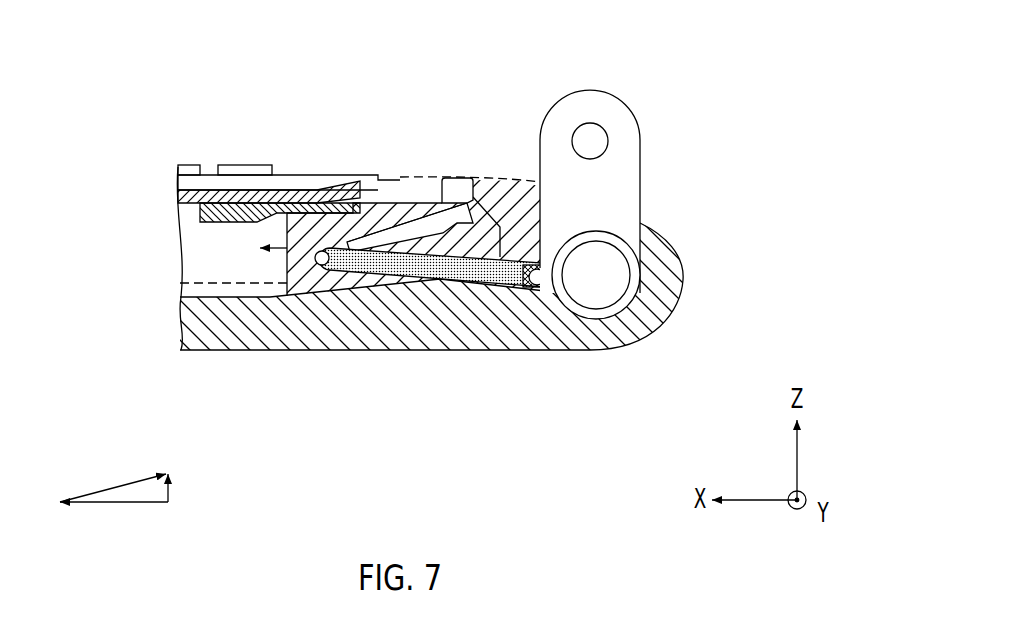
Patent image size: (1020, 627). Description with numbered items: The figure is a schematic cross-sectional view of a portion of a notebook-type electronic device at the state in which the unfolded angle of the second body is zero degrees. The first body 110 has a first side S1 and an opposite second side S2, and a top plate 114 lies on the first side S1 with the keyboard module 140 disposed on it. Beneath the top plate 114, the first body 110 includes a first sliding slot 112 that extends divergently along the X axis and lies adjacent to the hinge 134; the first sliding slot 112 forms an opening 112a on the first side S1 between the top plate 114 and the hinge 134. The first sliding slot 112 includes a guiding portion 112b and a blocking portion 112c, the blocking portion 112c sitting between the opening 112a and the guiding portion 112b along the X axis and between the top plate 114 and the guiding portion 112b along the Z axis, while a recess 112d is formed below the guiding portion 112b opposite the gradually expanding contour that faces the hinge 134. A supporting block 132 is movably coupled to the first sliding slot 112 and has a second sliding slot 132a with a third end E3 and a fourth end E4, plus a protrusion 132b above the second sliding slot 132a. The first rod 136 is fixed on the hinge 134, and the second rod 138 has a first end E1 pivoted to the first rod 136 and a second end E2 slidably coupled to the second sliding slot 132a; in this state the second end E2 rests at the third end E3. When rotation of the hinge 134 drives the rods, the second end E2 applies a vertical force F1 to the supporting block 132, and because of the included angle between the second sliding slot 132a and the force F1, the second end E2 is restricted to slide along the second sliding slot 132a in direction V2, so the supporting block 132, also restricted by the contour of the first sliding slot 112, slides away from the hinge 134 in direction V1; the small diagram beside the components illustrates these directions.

The first body 110 is at (257, 328).
The first sliding slot 112 is at (372, 187).
The opening 112a is at (512, 175).
The guiding portion 112b is at (272, 198).
The blocking portion 112c is at (328, 201).
The recess 112d is at (221, 295).
The top plate 114 is at (205, 184).
The supporting block 132 is at (423, 132).
The second sliding slot 132a is at (403, 228).
The protrusion 132b is at (458, 175).
The hinge 134 is at (632, 180).
The first rod 136 is at (546, 290).
The second rod 138 is at (417, 266).
The keyboard module 140 is at (227, 166).
The first side S1 is at (293, 173).
The second side S2 is at (208, 352).
The first end E1 is at (512, 290).
The second end E2 is at (325, 265).
The third end E3 is at (370, 227).
The fourth end E4 is at (450, 206).
The direction V1 is at (173, 386).
The direction V2 is at (113, 474).
The force F1 is at (186, 485).